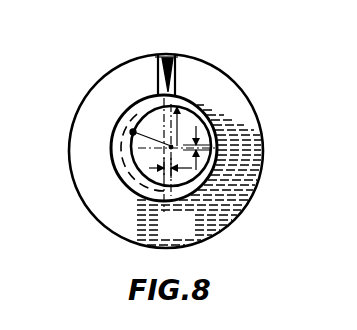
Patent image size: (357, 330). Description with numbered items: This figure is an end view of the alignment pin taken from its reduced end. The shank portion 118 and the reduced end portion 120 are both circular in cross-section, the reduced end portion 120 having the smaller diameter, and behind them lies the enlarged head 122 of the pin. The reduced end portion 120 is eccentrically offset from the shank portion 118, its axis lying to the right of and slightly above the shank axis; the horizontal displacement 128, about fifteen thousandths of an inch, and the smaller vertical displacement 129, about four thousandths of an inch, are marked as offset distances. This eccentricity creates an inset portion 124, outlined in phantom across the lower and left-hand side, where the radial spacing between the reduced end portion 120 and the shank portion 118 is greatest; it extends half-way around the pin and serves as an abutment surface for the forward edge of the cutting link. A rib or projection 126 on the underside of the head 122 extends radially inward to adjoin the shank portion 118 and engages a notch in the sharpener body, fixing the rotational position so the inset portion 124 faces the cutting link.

The shank portion 118 is at (203, 188).
The reduced end portion 120 is at (222, 170).
The enlarged head 122 is at (92, 100).
The inset portion 124 is at (137, 183).
The rib or projection 126 is at (178, 68).
The horizontal displacement 128 is at (166, 200).
The vertical displacement 129 is at (214, 143).